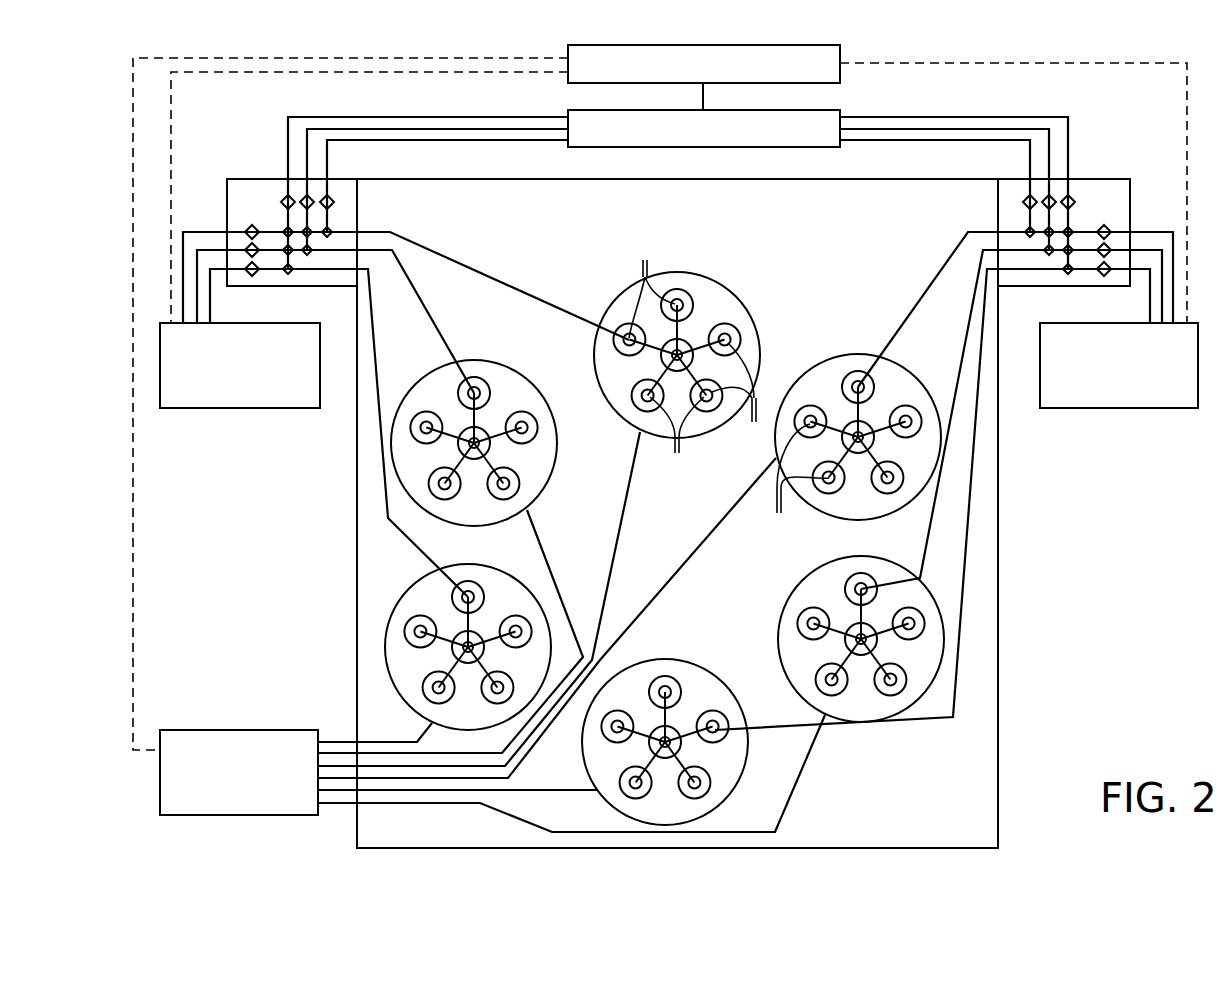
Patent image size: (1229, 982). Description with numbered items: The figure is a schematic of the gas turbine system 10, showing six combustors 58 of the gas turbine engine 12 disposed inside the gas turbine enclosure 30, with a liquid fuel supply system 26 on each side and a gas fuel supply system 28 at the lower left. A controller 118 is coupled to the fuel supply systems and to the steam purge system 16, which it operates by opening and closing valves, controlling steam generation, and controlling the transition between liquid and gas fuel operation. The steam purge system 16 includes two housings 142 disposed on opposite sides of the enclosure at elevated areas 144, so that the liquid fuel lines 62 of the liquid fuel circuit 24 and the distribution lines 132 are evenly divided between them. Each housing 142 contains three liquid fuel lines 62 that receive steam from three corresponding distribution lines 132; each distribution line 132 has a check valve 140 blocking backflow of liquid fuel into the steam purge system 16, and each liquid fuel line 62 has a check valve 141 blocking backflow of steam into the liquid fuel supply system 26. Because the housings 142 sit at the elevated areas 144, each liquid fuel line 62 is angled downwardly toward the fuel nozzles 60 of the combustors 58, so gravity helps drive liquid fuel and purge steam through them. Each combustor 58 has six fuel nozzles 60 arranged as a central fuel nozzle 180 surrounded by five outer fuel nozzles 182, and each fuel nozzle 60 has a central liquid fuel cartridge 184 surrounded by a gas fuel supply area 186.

The gas turbine system 10 is at (1052, 625).
The gas turbine engine 12 is at (607, 263).
The steam purge system 16 is at (838, 111).
The liquid fuel circuit 24 is at (505, 266).
The liquid fuel supply system 26 is at (243, 410).
The gas fuel supply system 28 is at (238, 729).
The gas turbine enclosure 30 is at (876, 219).
The combustor 58 is at (483, 361).
The fuel nozzle 60 is at (387, 573).
The liquid fuel line 62 is at (210, 303).
The controller 118 is at (840, 46).
The distribution line 132 is at (440, 142).
The check valve 140 is at (330, 198).
The check valve 141 is at (247, 230).
The housing 142 is at (252, 178).
The elevated area 144 is at (406, 220).
The central fuel nozzle 180 is at (662, 364).
The outer fuel nozzle 182 is at (740, 397).
The central liquid fuel cartridge 184 is at (748, 797).
The gas fuel supply area 186 is at (725, 329).